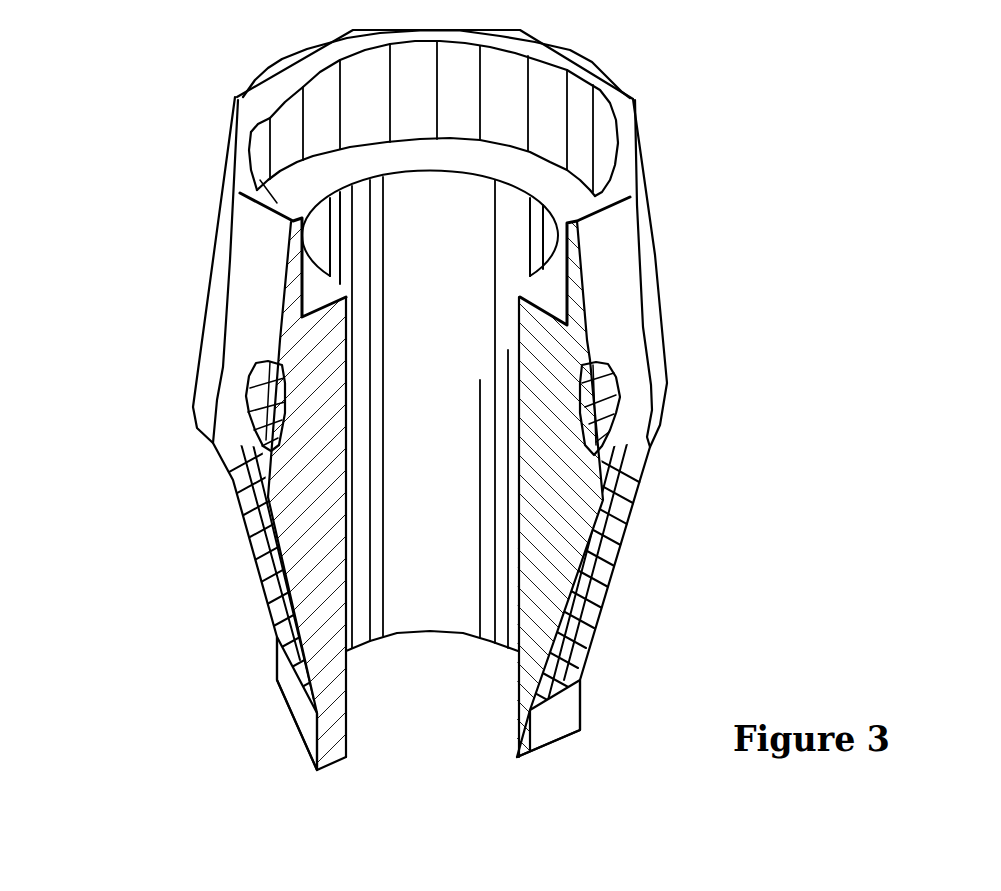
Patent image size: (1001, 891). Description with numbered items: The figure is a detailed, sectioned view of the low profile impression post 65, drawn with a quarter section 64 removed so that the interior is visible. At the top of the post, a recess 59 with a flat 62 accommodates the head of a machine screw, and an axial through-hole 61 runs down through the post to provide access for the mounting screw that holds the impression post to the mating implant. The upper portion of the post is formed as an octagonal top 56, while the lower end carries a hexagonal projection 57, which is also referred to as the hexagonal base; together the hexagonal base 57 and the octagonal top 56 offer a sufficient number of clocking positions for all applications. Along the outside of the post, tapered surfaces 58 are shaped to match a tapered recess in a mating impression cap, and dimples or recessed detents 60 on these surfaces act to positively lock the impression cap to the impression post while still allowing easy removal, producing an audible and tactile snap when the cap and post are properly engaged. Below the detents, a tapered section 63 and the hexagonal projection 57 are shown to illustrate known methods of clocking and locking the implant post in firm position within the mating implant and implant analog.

The octagonal top 56 is at (195, 433).
The hexagonal projection 57 is at (607, 707).
The tapered surfaces 58 is at (645, 428).
The recess 59 is at (498, 113).
The recessed detents 60 is at (432, 450).
The axial through-hole 61 is at (530, 382).
The flat 62 is at (500, 421).
The tapered section 63 is at (336, 574).
The quarter section 64 is at (213, 703).
The low profile impression post 65 is at (690, 310).